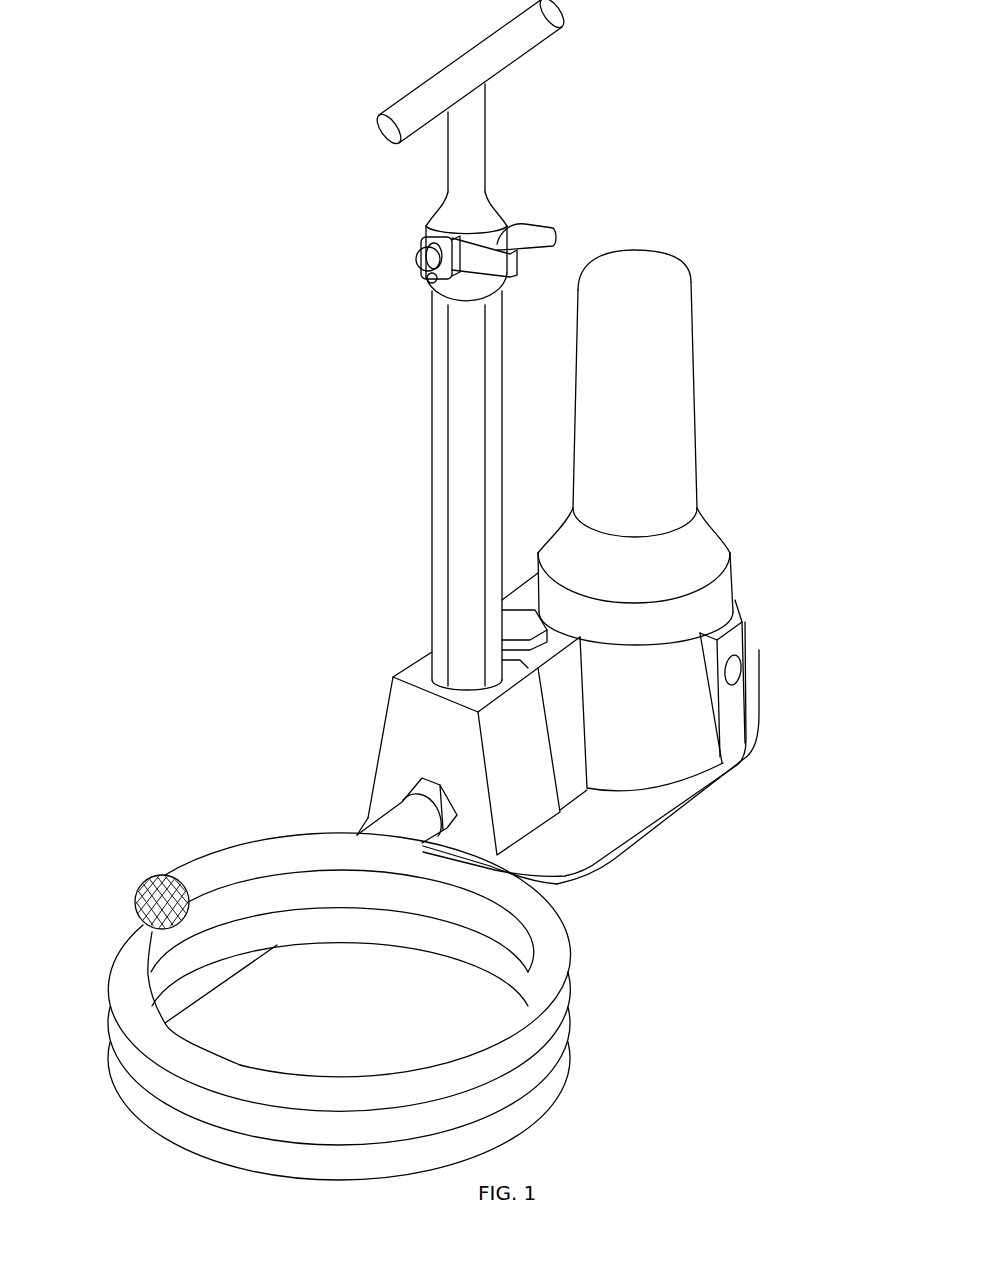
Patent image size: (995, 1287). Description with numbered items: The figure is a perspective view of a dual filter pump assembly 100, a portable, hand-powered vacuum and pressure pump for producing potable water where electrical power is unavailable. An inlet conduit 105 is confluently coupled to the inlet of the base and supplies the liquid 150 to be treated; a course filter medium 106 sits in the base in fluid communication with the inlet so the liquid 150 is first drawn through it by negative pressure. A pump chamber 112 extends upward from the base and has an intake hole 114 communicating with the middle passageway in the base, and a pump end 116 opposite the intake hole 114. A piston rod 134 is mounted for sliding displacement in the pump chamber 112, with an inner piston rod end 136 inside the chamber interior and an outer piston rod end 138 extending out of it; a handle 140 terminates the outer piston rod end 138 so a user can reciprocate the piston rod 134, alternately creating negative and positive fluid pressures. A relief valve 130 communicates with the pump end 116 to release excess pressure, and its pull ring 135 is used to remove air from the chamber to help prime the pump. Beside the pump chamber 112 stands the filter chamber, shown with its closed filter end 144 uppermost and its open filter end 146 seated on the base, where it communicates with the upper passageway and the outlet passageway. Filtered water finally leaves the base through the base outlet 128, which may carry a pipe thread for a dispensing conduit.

The dual filter pump assembly 100 is at (697, 180).
The inlet conduit 105 is at (170, 868).
The course filter medium 106 is at (136, 894).
The pump chamber 112 is at (432, 460).
The intake hole 114 is at (432, 667).
The pump end 116 is at (433, 292).
The base outlet 128 is at (745, 665).
The relief valve 130 is at (420, 255).
The piston rod 134 is at (448, 425).
The pull ring 135 is at (434, 281).
The inner piston rod end 136 is at (438, 672).
The outer piston rod end 138 is at (447, 137).
The handle 140 is at (440, 68).
The closed filter end 144 is at (647, 250).
The open filter end 146 is at (734, 578).
The liquid 150 is at (128, 918).